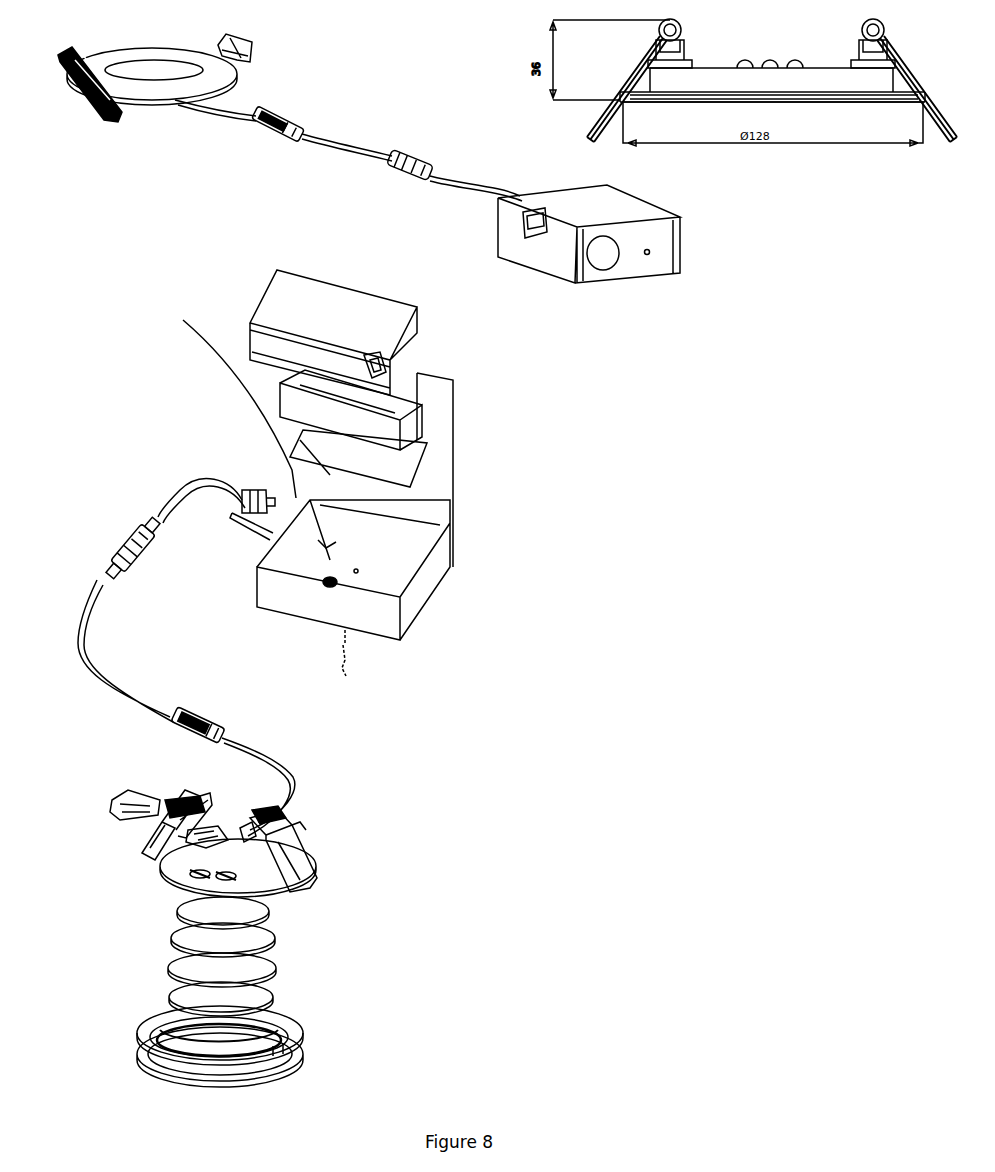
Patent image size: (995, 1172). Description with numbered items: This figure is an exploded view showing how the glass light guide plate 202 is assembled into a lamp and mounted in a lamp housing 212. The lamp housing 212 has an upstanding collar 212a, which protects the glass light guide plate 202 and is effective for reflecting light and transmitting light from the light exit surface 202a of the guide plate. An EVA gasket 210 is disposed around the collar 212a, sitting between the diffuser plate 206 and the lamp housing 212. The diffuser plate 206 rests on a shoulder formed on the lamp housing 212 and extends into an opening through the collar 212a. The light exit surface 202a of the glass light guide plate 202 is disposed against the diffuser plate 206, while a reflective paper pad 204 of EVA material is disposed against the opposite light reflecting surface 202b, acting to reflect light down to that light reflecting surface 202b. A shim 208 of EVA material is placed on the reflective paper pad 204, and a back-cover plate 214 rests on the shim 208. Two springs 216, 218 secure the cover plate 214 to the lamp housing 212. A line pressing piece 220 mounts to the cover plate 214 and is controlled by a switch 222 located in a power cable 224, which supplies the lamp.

The glass light guide plate 202 is at (221, 984).
The light exit surface 202a is at (273, 977).
The light reflecting surface 202b is at (168, 970).
The reflective paper pad 204 is at (270, 942).
The diffuser plate 206 is at (150, 1037).
The shim 208 is at (267, 907).
The gasket 210 is at (252, 1029).
The lamp housing 212 is at (255, 1069).
The collar 212a is at (303, 1052).
The back-cover plate 214 is at (170, 863).
The spring 216 is at (293, 833).
The spring 218 is at (152, 835).
The line pressing piece 220 is at (216, 838).
The switch 222 is at (173, 730).
The power cable 224 is at (93, 640).